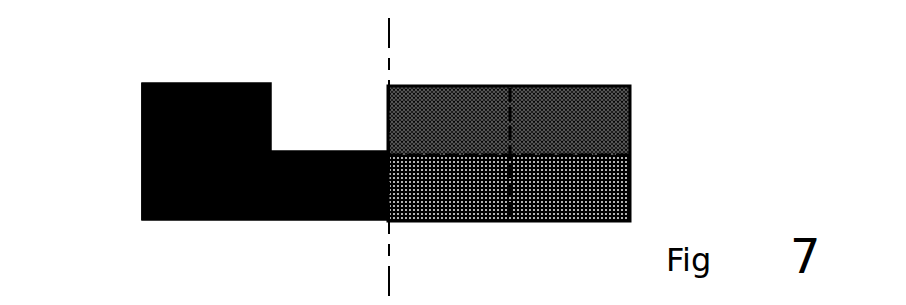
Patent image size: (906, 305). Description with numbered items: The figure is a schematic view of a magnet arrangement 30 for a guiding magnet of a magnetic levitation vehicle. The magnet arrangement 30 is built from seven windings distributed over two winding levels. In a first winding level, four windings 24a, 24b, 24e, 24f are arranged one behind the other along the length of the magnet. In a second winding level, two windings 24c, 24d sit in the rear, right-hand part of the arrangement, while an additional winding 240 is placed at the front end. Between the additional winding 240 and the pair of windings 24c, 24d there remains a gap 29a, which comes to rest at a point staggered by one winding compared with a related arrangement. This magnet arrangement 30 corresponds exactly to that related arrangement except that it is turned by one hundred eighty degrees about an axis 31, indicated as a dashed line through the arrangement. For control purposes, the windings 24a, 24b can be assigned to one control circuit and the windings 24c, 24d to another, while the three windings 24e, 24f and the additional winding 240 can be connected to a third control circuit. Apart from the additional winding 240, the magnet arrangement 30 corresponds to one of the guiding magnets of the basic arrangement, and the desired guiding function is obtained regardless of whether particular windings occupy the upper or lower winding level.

The additional winding 240 is at (192, 75).
The gap 29a is at (317, 115).
The winding 24d is at (447, 99).
The winding 24c is at (559, 107).
The winding 24a is at (600, 178).
The winding 24b is at (467, 213).
The winding 24e is at (298, 212).
The winding 24f is at (172, 212).
The magnet arrangement 30 is at (134, 144).
The axis 31 is at (383, 270).